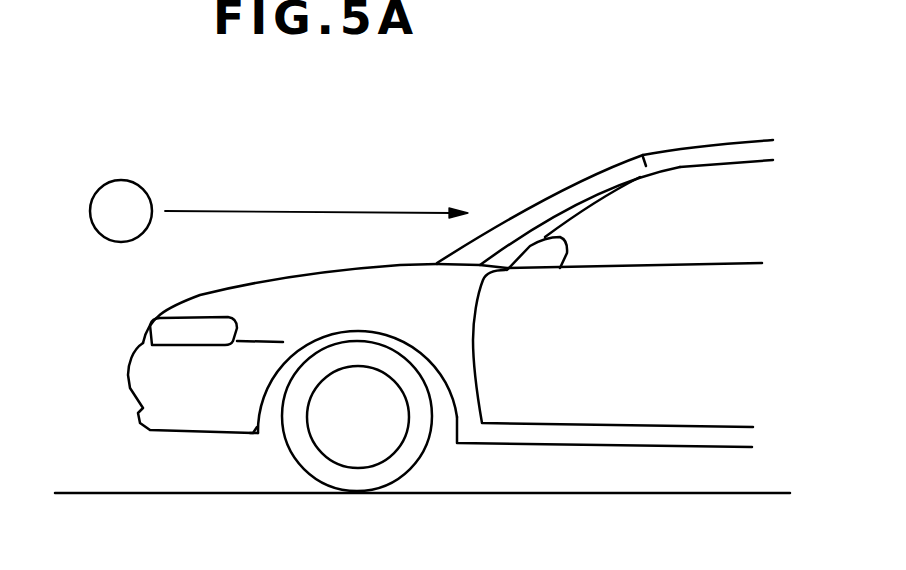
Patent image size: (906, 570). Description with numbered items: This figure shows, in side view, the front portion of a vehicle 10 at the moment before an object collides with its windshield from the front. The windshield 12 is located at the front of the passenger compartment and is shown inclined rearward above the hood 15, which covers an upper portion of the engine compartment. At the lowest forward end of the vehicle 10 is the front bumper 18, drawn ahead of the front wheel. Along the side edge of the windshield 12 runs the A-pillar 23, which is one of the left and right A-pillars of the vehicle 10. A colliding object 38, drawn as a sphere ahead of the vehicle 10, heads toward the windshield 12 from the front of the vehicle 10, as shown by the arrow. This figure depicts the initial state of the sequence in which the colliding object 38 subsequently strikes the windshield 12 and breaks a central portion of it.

The vehicle 10 is at (712, 140).
The windshield 12 is at (560, 190).
The hood 15 is at (197, 298).
The front bumper 18 is at (127, 375).
The left A-pillar 23 is at (597, 190).
The colliding object 38 is at (118, 180).